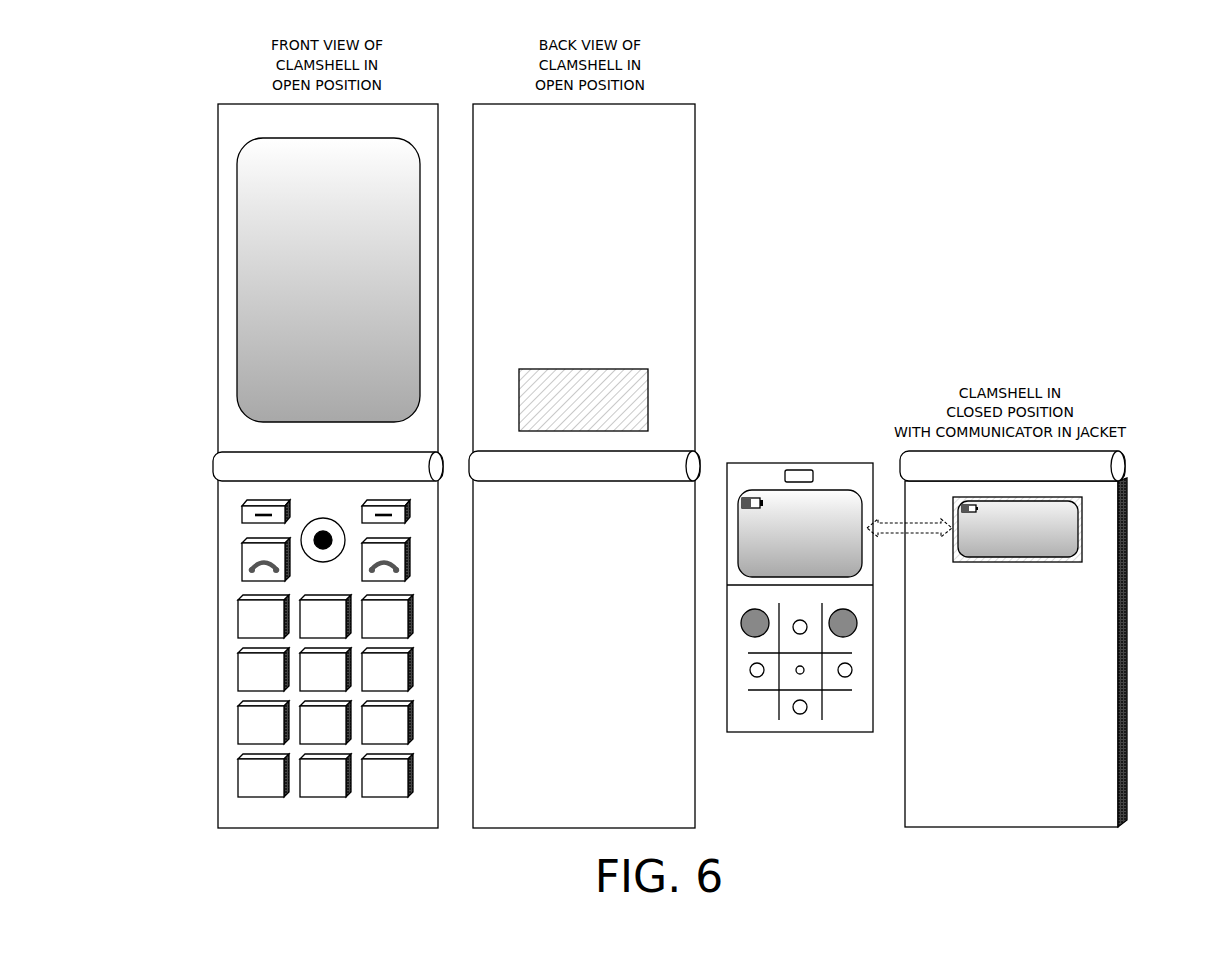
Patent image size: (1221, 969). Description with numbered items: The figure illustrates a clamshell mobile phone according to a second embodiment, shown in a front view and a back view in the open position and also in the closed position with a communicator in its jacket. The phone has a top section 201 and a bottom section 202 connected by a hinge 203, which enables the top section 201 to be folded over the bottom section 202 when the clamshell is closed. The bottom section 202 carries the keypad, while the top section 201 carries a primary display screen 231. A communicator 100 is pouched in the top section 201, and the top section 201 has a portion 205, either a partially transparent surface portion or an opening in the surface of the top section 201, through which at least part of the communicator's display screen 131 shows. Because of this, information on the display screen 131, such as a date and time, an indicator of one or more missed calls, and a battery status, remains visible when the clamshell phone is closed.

The communicator 100 is at (832, 472).
The display screen 131 is at (773, 502).
The top section 201 is at (238, 120).
The bottom section 202 is at (238, 533).
The hinge 203 is at (238, 466).
The portion 205 is at (630, 388).
The display 231 is at (265, 175).